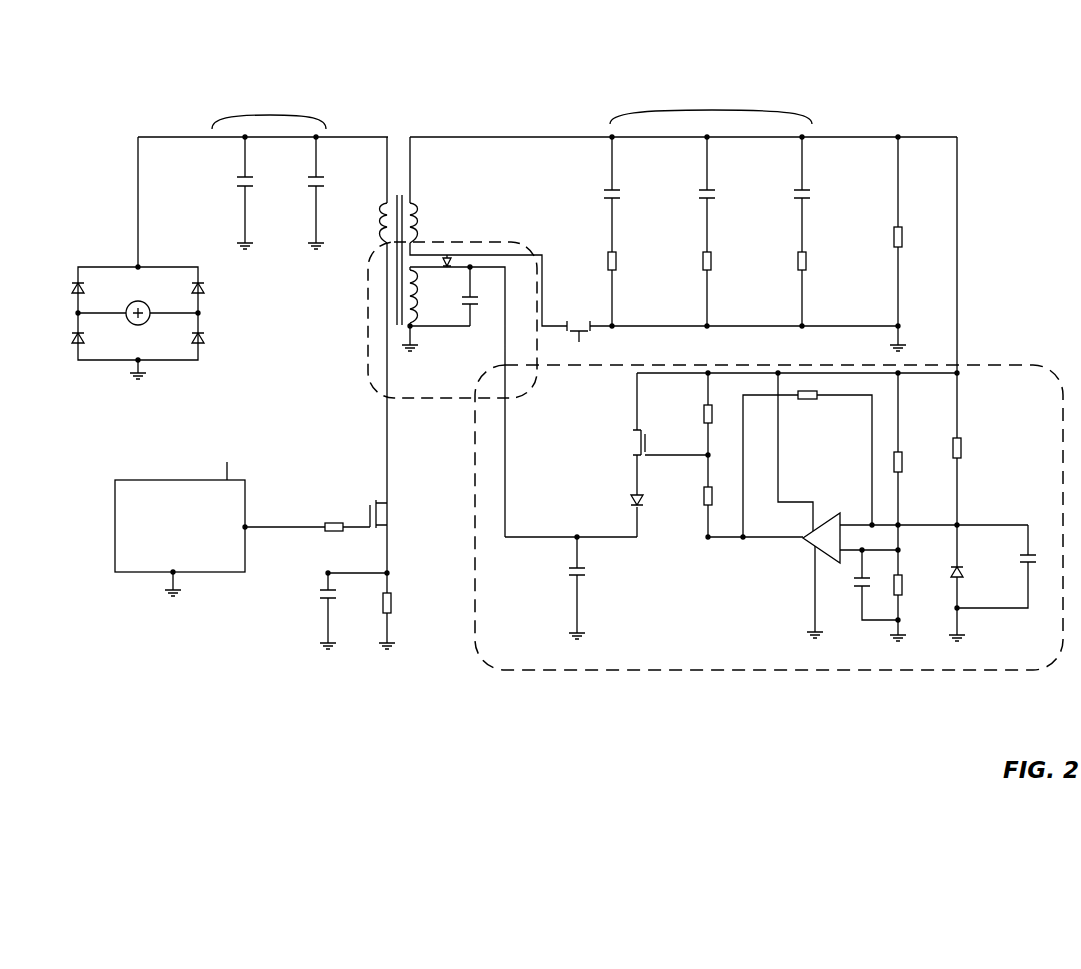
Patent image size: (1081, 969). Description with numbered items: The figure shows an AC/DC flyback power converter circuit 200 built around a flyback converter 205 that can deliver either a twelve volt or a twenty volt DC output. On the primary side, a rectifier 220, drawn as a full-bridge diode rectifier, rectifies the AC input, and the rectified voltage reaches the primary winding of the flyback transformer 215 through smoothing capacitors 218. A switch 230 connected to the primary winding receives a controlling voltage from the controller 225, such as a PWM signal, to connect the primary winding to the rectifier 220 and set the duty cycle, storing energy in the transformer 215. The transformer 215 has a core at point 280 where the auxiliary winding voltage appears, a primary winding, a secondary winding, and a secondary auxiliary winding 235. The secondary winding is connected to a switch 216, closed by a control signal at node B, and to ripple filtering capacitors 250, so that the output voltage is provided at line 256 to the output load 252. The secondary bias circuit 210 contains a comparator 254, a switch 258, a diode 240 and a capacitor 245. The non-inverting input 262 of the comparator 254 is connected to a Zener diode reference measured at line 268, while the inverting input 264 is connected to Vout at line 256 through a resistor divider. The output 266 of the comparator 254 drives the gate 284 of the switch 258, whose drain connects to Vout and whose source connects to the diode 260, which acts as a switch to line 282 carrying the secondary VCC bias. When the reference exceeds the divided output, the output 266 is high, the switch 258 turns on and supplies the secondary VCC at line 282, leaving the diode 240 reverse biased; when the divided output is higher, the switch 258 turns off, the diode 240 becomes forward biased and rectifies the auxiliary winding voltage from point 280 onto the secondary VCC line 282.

The AC/DC flyback power converter circuit 200 is at (122, 90).
The flyback converter 205 is at (445, 108).
The secondary bias circuit 210 is at (720, 674).
The flyback transformer 215 is at (423, 257).
The switch 216 is at (570, 312).
The smoothing capacitors 218 is at (273, 103).
The rectifier 220 is at (233, 320).
The controller 225 is at (170, 463).
The switch 230 is at (352, 493).
The secondary auxiliary winding 235 is at (380, 293).
The diode D3 240 is at (452, 375).
The capacitor 245 is at (481, 315).
The ripple filtering capacitors 250 is at (733, 107).
The output load 252 is at (922, 215).
The comparator 254 is at (783, 560).
The line 256 is at (958, 136).
The switch Q3 258 is at (620, 437).
The diode D8 260 is at (655, 503).
The non-inverting input 262 is at (848, 520).
The inverting input 264 is at (845, 552).
The output 266 is at (726, 540).
The line 268 is at (962, 522).
The point 280 is at (400, 315).
The line 282 is at (592, 540).
The gate 284 is at (670, 454).